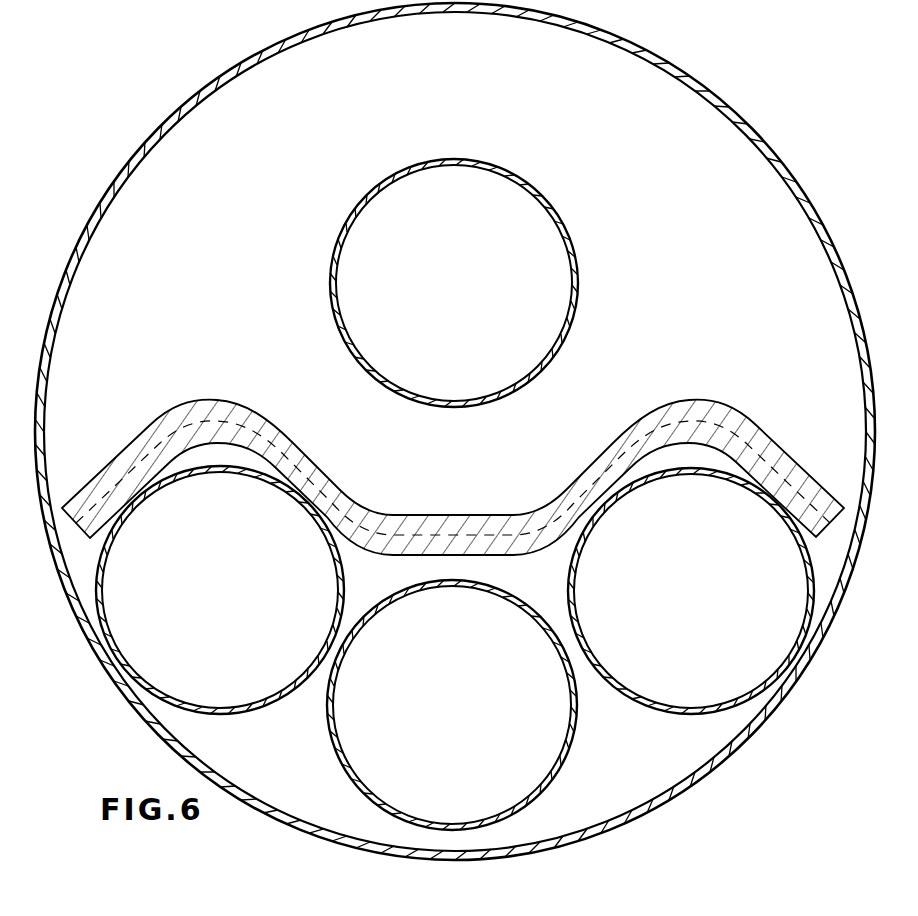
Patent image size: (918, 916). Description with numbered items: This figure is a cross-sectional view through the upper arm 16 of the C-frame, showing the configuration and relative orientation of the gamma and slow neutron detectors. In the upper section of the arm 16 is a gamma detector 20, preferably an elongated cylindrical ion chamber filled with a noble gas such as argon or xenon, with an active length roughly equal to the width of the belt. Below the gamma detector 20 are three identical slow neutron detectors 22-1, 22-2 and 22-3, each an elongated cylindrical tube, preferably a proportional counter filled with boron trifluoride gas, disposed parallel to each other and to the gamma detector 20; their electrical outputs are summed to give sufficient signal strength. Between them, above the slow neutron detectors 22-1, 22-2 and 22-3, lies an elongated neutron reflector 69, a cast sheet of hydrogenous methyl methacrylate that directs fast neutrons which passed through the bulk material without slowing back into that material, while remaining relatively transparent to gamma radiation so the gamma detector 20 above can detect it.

The upper arm 16 is at (707, 72).
The gamma detector 20 is at (551, 359).
The slow neutron detector 22-1 is at (118, 536).
The slow neutron detector 22-2 is at (350, 649).
The slow neutron detector 22-3 is at (573, 579).
The neutron reflector 69 is at (423, 520).